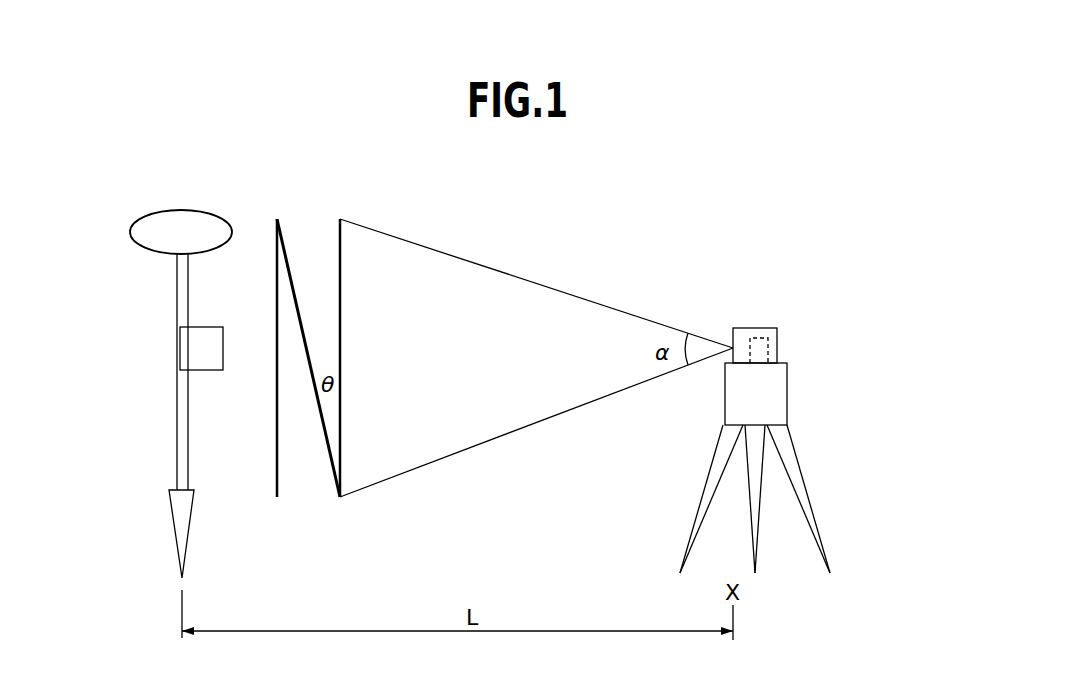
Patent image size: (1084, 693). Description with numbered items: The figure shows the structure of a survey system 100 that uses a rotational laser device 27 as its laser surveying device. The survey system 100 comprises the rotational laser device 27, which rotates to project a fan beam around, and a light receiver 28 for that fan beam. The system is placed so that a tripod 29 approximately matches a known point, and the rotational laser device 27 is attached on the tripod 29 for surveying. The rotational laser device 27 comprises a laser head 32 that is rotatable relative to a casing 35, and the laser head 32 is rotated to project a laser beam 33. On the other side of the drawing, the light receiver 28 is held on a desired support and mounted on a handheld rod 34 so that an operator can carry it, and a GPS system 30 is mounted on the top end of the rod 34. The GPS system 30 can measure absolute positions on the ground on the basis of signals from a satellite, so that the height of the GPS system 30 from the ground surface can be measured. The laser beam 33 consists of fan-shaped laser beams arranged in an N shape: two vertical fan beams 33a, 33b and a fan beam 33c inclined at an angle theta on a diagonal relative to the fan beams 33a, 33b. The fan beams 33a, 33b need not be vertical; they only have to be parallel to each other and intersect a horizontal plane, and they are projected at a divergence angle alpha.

The survey system 100 is at (545, 184).
The rotational laser device 27 is at (840, 366).
The light receiver 28 is at (204, 327).
The tripod 29 is at (700, 495).
The GPS system 30 is at (152, 253).
The laser head 32 is at (748, 330).
The laser beam 33 is at (566, 283).
The vertical fan beam 33a is at (340, 325).
The vertical fan beam 33b is at (277, 440).
The inclined fan beam 33c is at (297, 307).
The handheld rod 34 is at (176, 432).
The casing 35 is at (787, 393).